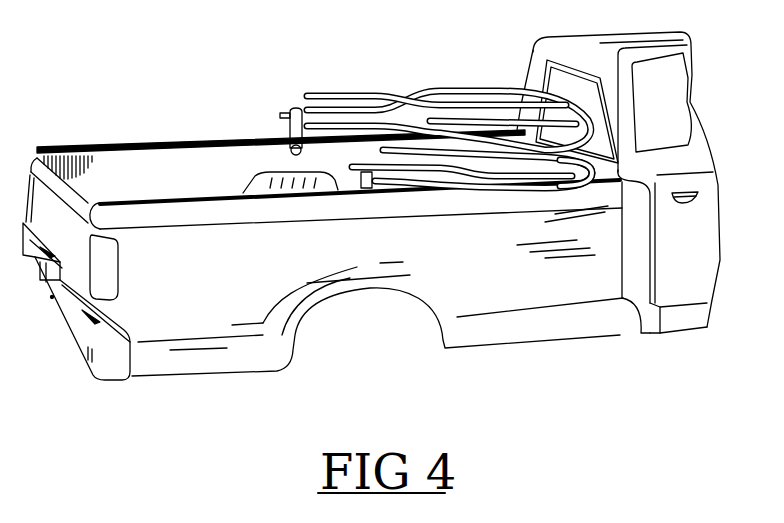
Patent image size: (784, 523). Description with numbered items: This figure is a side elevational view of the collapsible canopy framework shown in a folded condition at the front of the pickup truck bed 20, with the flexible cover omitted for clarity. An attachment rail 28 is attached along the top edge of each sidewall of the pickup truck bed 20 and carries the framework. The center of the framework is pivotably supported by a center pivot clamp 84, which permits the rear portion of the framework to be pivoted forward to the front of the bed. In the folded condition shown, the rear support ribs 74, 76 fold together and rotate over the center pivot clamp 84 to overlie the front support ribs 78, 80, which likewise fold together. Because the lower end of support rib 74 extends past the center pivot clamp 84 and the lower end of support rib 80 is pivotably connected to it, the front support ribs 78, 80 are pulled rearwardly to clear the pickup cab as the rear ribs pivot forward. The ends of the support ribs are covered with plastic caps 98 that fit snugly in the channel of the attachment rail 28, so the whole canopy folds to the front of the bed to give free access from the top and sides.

The pickup truck bed 20 is at (459, 357).
The attachment rail 28 is at (108, 148).
The rear support rib 74 is at (478, 92).
The rear support rib 76 is at (474, 186).
The front support rib 78 is at (535, 184).
The front support rib 80 is at (600, 172).
The center pivot clamp 84 is at (285, 118).
The plastic cap 98 is at (320, 131).